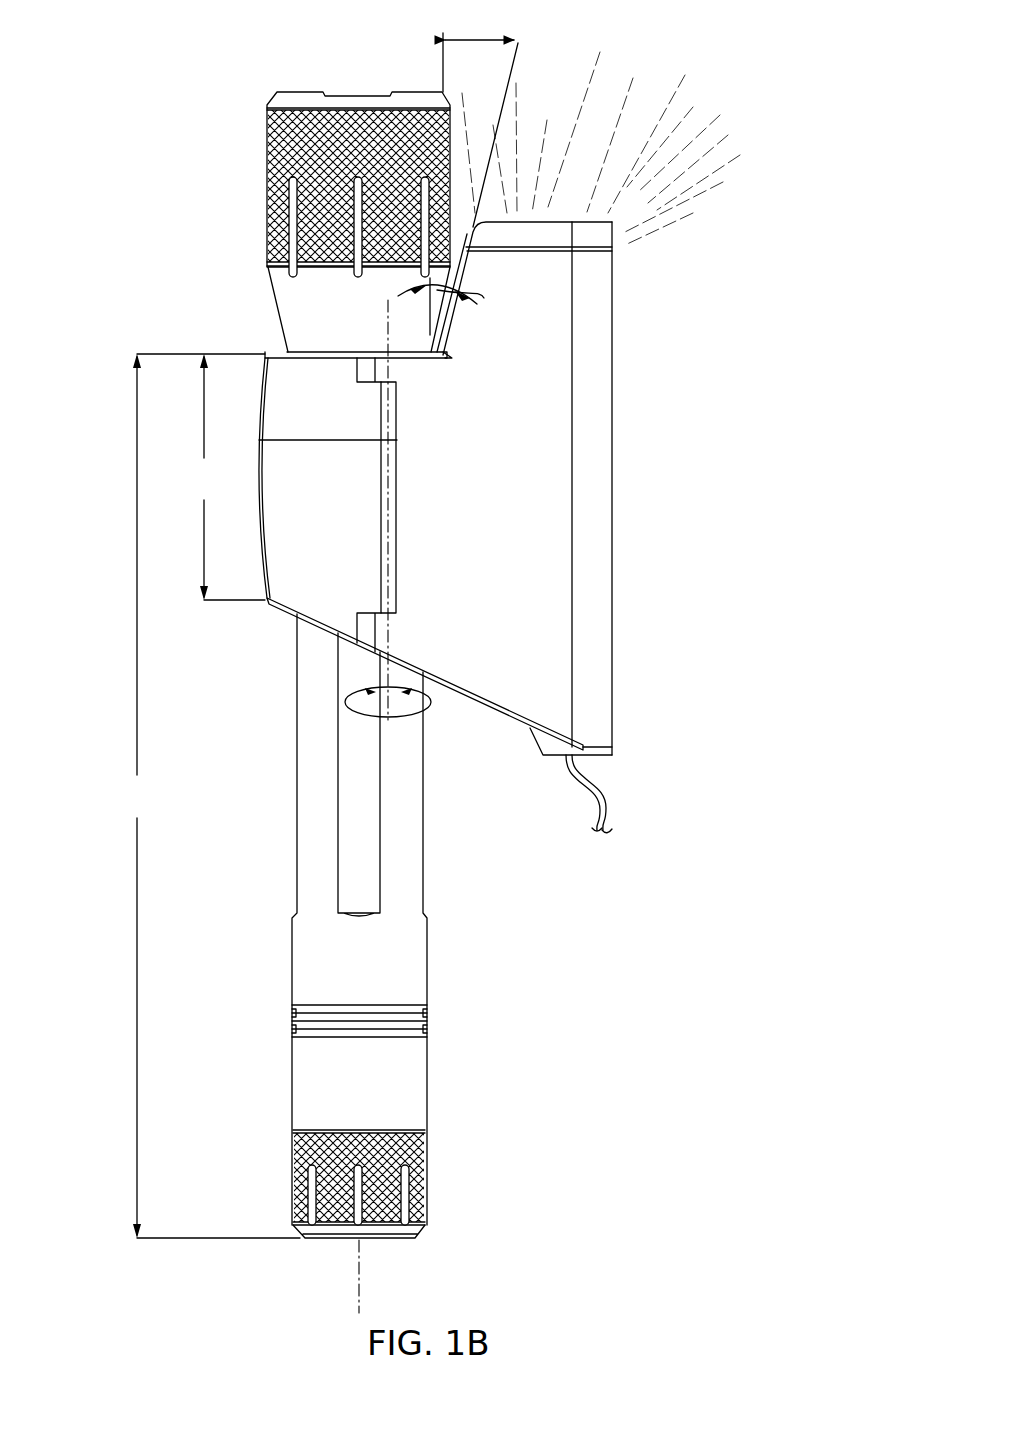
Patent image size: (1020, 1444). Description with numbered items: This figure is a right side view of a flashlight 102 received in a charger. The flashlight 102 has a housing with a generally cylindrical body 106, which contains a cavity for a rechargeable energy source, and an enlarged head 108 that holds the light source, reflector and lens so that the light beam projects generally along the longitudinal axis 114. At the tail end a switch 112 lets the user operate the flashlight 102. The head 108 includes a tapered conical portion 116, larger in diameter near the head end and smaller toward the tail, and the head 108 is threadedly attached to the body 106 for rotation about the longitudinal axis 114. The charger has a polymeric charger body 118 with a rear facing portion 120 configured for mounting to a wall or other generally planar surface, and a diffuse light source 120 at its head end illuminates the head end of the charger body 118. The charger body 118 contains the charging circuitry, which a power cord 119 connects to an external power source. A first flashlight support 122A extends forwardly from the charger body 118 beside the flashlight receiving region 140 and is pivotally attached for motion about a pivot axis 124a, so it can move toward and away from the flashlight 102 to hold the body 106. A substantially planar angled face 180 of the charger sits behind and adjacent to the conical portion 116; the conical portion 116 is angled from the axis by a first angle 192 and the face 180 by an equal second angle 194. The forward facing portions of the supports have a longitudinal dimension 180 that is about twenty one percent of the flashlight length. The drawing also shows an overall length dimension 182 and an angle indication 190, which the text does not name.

The flashlight 102 is at (668, 475).
The body 106 is at (333, 970).
The head 108 is at (250, 163).
The switch 112 is at (326, 1250).
The longitudinal axis 114 is at (388, 1262).
The conical portion 116 is at (312, 331).
The charger body 118 is at (452, 516).
The power cord 119 is at (607, 798).
The rear facing portion / diffuse light source 120 is at (560, 222).
The first flashlight support 122A is at (340, 516).
The pivot axis 124a is at (430, 712).
The flashlight receiving region 140 is at (275, 618).
The angled face / longitudinal dimension 180 is at (201, 477).
The overall length dimension 182 is at (207, 796).
The tilt angle 190 is at (470, 277).
The first angle 192 is at (437, 286).
The second angle 194 is at (490, 39).